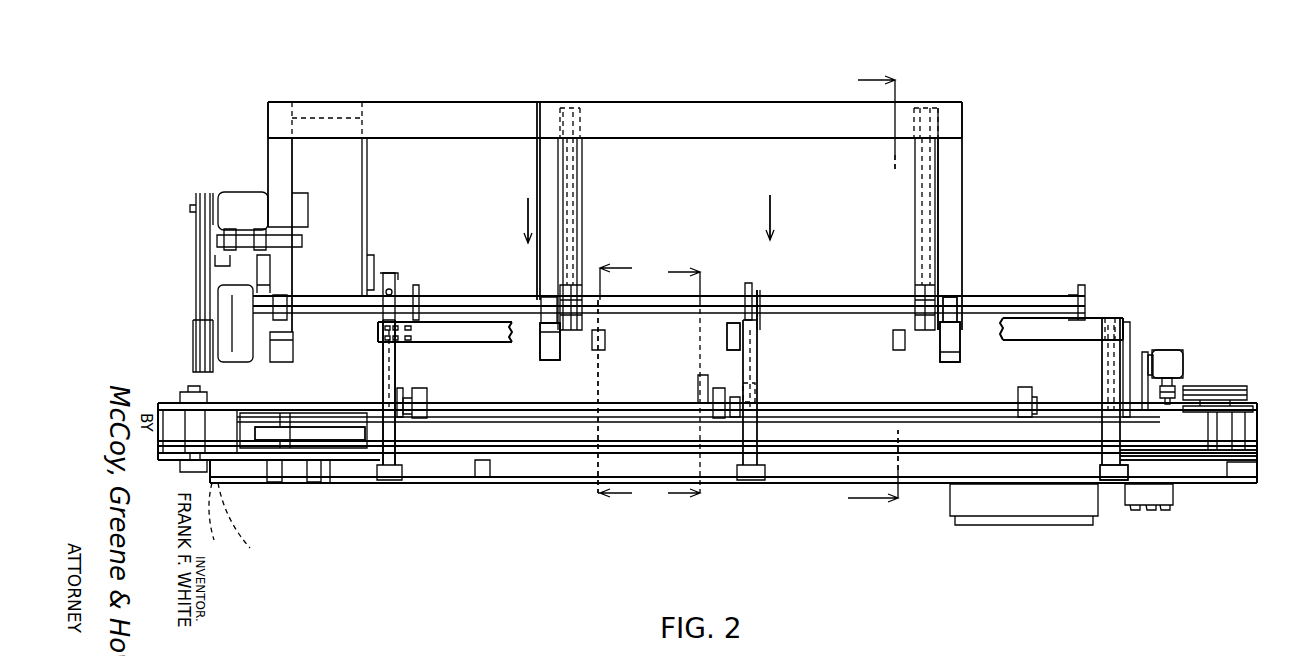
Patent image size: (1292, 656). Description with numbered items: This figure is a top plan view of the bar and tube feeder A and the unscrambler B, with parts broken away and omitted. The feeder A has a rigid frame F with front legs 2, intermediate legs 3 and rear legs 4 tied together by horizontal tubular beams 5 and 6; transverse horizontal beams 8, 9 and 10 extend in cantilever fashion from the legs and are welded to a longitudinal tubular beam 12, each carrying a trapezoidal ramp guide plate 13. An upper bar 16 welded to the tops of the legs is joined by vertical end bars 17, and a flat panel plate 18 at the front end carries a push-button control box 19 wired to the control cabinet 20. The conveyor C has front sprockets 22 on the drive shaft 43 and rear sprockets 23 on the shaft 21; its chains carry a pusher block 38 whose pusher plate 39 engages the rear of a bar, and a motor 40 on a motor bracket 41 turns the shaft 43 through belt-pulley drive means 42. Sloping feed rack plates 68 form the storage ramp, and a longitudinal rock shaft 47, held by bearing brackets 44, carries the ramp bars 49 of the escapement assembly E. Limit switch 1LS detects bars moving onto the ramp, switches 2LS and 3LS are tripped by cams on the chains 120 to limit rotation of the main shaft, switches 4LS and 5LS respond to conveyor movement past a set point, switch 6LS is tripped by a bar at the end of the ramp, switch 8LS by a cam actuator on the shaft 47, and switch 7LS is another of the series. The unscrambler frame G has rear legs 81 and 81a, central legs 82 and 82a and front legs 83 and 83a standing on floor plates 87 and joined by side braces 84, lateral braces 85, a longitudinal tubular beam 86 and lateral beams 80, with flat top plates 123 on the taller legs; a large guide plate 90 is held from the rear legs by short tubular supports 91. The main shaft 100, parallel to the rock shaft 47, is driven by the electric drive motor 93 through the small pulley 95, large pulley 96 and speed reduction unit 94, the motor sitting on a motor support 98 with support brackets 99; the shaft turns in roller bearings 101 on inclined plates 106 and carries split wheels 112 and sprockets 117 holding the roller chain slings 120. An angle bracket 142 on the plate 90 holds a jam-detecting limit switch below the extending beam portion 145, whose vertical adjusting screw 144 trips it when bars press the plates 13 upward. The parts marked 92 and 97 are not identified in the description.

The front legs 2 is at (1113, 473).
The intermediate legs 3 is at (783, 516).
The rear legs 4 is at (390, 478).
The horizontal tubular beam 5 is at (614, 385).
The horizontal tubular beam 6 is at (646, 238).
The transverse horizontal beam 8 is at (1110, 386).
The transverse horizontal beam 9 is at (760, 348).
The transverse horizontal beam 10 is at (390, 346).
The longitudinal horizontal tubular beam 12 is at (480, 335).
The ramp guide plate 13 is at (382, 372).
The upper bar 16 is at (495, 484).
The vertical end bars 17 is at (238, 528).
The flat panel plate 18 is at (1222, 484).
The push-button control box 19 is at (1174, 500).
The control cabinet 20 is at (1016, 518).
The horizontal shaft 21 is at (187, 412).
The front sprockets 22 is at (1188, 462).
The rear sprockets 23 is at (219, 521).
The pusher block 38 is at (250, 424).
The pusher plate 39 is at (330, 442).
The motor 40 is at (1172, 355).
The motor bracket 41 is at (1146, 352).
The belt-pulley drive means 42 is at (1200, 388).
The drive shaft 43 is at (1217, 432).
The bearing brackets 44 is at (393, 435).
The rock shaft 47 is at (548, 417).
The ramp bars 49 is at (428, 397).
The feed rack plates 68 is at (400, 389).
The lateral beams 80 is at (537, 168).
The rear leg 81 is at (294, 345).
The central leg 82 is at (540, 340).
The front leg 83 is at (950, 325).
The side braces 84 is at (732, 101).
The lateral tubular braces 85 is at (268, 153).
The longitudinal tubular beam 86 is at (440, 101).
The floor plates 87 is at (556, 361).
The guide plate 90 is at (368, 180).
The short tubular supports 91 is at (310, 119).
The bracket 92 is at (298, 206).
The electric drive motor 93 is at (234, 195).
The speed reduction unit 94 is at (230, 318).
The small pulley 95 is at (188, 208).
The large pulley 96 is at (194, 356).
The belt 97 is at (195, 250).
The motor support 98 is at (300, 240).
The support brackets 99 is at (258, 262).
The main shaft 100 is at (458, 295).
The roller bearings 101 is at (283, 297).
The inclined flat rectangular plate 106 is at (282, 296).
The split circular wheels 112 is at (418, 286).
The sprockets 117 is at (940, 245).
The roller chains 120 is at (583, 186).
The flat top plates 123 is at (555, 108).
The angle bracket 142 is at (375, 258).
The vertical adjusting screw 144 is at (390, 273).
The extending beam portion 145 is at (396, 275).
The rear leg 81a is at (280, 100).
The central leg 82a is at (538, 102).
The front leg 83a is at (950, 100).
The limit switch 1LS is at (733, 322).
The limit switch 2LS is at (598, 352).
The limit switch 3LS is at (895, 330).
The limit switch 4LS is at (274, 483).
The limit switch 5LS is at (314, 483).
The limit switch 6LS is at (757, 395).
The limit switch 7LS is at (486, 478).
The limit switch 8LS is at (698, 390).
The bar and tube feeder A is at (1184, 332).
The unscrambler B is at (242, 116).
The conveyor C is at (281, 401).
The escapement assembly E is at (787, 440).
The rigid frame F is at (383, 452).
The rigid frame G is at (975, 160).